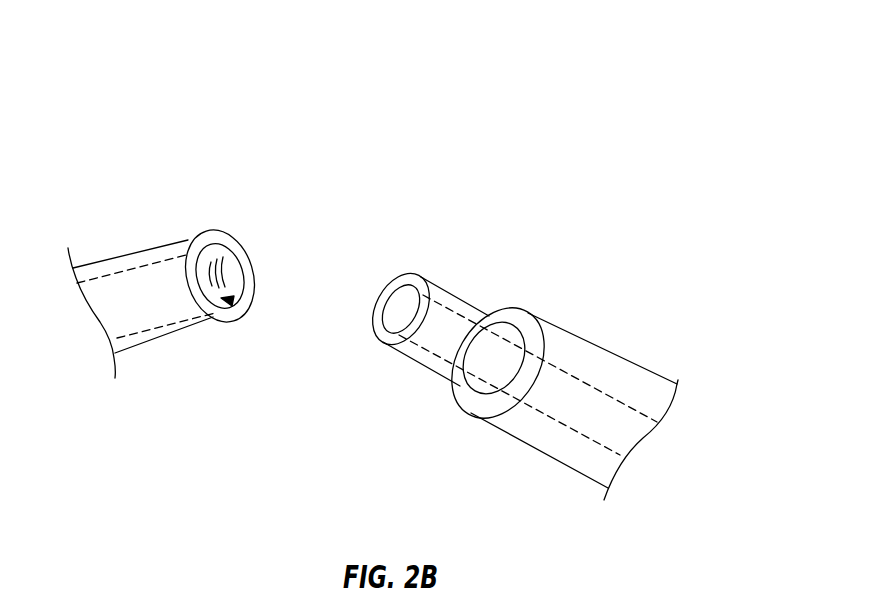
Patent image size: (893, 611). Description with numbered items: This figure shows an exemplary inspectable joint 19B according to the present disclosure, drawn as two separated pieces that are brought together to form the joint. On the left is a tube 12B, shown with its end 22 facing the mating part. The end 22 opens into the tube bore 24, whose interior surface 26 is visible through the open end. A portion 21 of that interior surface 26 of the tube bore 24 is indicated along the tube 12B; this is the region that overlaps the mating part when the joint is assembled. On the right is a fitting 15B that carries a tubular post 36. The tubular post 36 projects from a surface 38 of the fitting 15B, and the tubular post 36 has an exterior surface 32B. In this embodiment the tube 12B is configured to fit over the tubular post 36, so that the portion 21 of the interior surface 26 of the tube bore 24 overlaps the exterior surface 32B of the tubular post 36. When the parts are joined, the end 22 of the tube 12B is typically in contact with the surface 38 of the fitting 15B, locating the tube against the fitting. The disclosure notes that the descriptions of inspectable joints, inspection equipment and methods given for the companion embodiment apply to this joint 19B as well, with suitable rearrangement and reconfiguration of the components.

The joint 19B is at (432, 97).
The tube 12B is at (138, 165).
The fitting 15B is at (633, 312).
The portion 21 is at (243, 353).
The end 22 is at (251, 267).
The tube bore 24 is at (232, 303).
The interior surface 26 is at (211, 252).
The exterior surface 32B is at (452, 303).
The tubular post 36 is at (432, 383).
The surface 38 is at (529, 315).